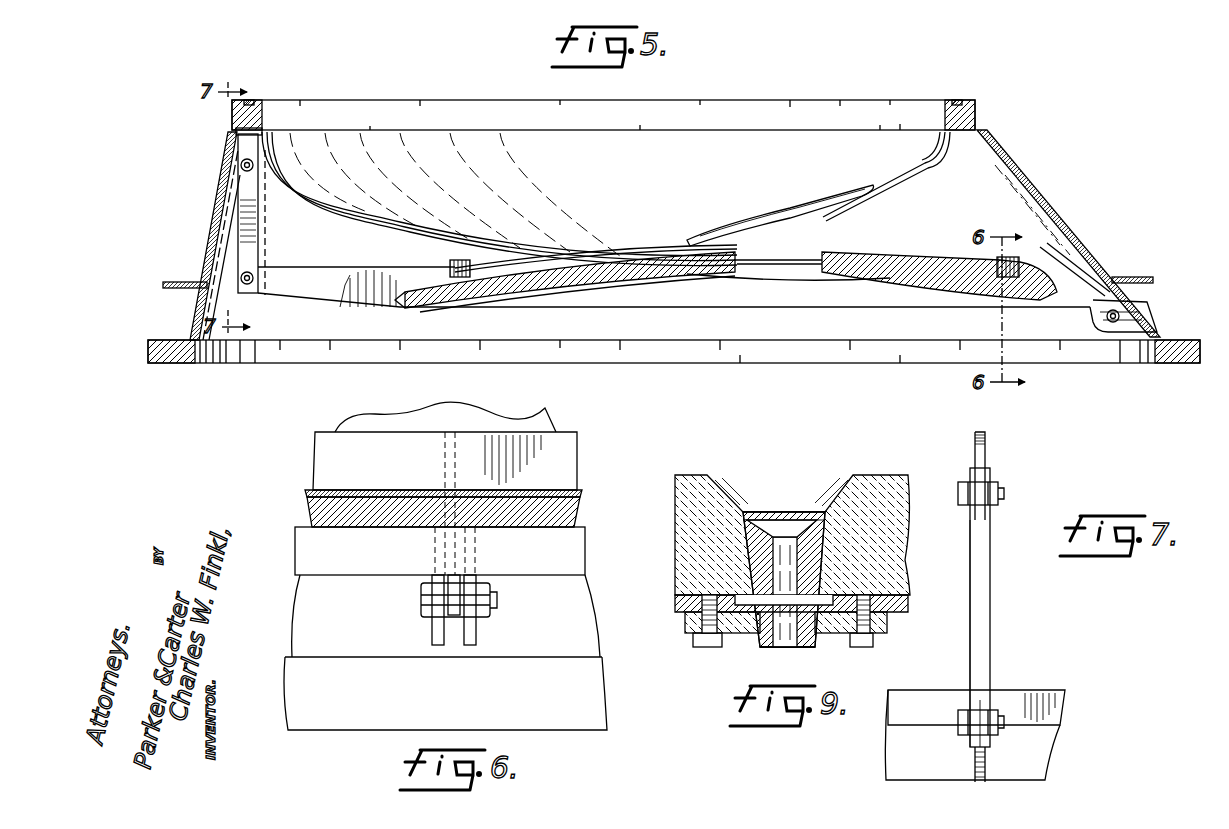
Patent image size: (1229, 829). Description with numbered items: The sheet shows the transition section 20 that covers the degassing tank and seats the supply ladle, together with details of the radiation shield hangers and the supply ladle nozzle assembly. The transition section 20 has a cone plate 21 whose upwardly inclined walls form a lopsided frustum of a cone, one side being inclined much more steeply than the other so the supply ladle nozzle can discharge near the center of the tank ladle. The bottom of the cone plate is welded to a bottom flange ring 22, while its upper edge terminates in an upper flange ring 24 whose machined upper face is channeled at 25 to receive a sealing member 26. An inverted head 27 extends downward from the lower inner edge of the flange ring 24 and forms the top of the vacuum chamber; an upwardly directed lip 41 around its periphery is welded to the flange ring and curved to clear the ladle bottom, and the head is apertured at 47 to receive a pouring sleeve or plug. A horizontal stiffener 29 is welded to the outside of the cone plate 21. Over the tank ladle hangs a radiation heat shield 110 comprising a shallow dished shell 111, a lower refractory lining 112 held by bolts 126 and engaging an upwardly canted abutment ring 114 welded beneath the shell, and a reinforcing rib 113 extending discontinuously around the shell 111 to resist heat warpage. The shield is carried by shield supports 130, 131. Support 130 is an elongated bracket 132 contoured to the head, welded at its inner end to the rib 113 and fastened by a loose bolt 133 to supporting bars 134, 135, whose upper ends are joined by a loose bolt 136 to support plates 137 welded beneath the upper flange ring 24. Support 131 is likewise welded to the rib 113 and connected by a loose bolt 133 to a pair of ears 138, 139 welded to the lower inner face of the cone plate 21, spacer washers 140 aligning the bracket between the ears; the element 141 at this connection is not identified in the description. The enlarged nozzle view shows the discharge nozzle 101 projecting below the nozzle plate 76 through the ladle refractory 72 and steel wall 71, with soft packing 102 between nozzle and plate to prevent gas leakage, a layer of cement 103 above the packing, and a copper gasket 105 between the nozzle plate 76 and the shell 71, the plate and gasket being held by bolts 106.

In FIG. 5, the transition section 20 is at (1062, 205).
In FIG. 5, the cone plate 21 is at (216, 216).
In FIG. 6, the cone plate 21 is at (520, 418).
In FIG. 5, the bottom flange ring 22 is at (172, 340).
In FIG. 6, the bottom flange ring 22 is at (600, 716).
In FIG. 5, the upper flange ring 24 is at (978, 128).
In FIG. 5, the channel 25 is at (962, 100).
In FIG. 5, the sealing member 26 is at (250, 100).
In FIG. 5, the inverted head 27 is at (868, 198).
In FIG. 5, the horizontal stiffener 29 is at (1138, 277).
In FIG. 5, the upwardly directed lip 41 is at (945, 147).
In FIG. 5, the aperture 47 is at (812, 212).
In FIG. 9, the outer steel wall 71 is at (900, 613).
In FIG. 9, the refractory 72 is at (885, 475).
In FIG. 9, the nozzle plate 76 is at (752, 634).
In FIG. 9, the nozzle 101 is at (760, 535).
In FIG. 9, the soft packing 102 is at (822, 637).
In FIG. 9, the layer of cement 103 is at (815, 512).
In FIG. 9, the metal gasket 105 is at (690, 626).
In FIG. 9, the bolts 106 is at (710, 648).
In FIG. 5, the radiation heat shield 110 is at (884, 248).
In FIG. 5, the shell 111 is at (372, 307).
In FIG. 6, the shell 111 is at (581, 493).
In FIG. 7, the shell 111 is at (1040, 758).
In FIG. 5, the refractory lining 112 is at (472, 298).
In FIG. 6, the refractory lining 112 is at (576, 513).
In FIG. 5, the reinforcing rib 113 is at (452, 262).
In FIG. 6, the reinforcing rib 113 is at (576, 460).
In FIG. 7, the reinforcing rib 113 is at (1060, 708).
In FIG. 5, the abutment ring 114 is at (400, 307).
In FIG. 5, the bolts 126 is at (900, 254).
In FIG. 5, the shield support 130 is at (290, 302).
In FIG. 5, the shield support 131 is at (1058, 256).
In FIG. 5, the elongated bracket 132 is at (362, 256).
In FIG. 7, the elongated bracket 132 is at (978, 700).
In FIG. 5, the loose bolt 133 is at (255, 275).
In FIG. 7, the loose bolt 133 is at (996, 692).
In FIG. 5, the supporting bar 134 is at (258, 220).
In FIG. 7, the supporting bar 134 is at (992, 606).
In FIG. 7, the supporting bar 135 is at (970, 633).
In FIG. 5, the loose bolt 136 is at (240, 164).
In FIG. 7, the loose bolt 136 is at (1004, 494).
In FIG. 5, the support plate 137 is at (240, 137).
In FIG. 7, the support plate 137 is at (990, 457).
In FIG. 5, the ear 138 is at (1150, 326).
In FIG. 6, the ear 138 is at (478, 640).
In FIG. 6, the ear 139 is at (432, 640).
In FIG. 5, the spacer washers 140 is at (1120, 315).
In FIG. 6, the spacer washers 140 is at (455, 635).
In FIG. 6, the nut 141 is at (497, 604).